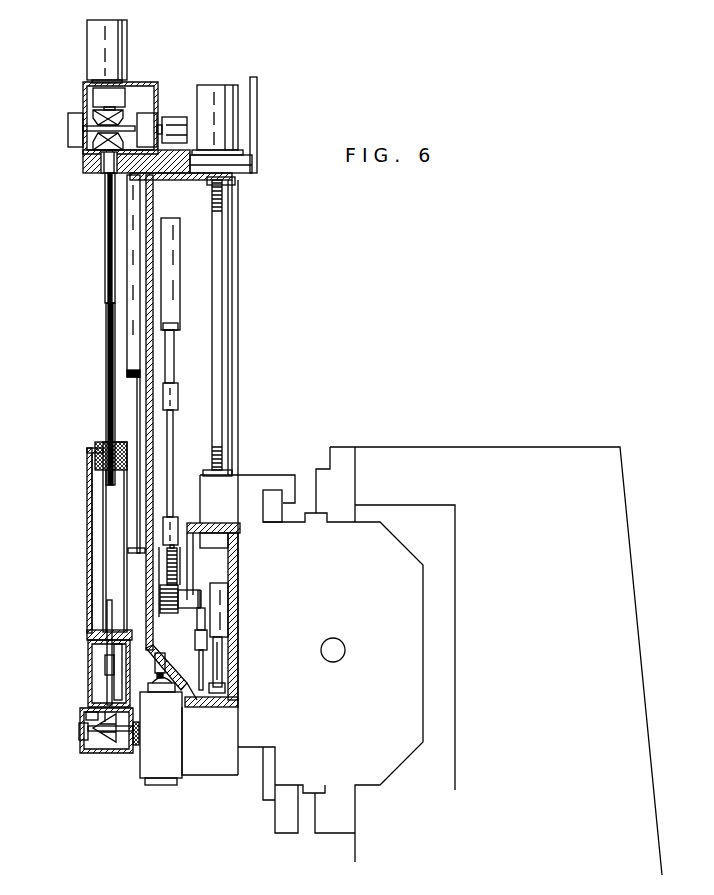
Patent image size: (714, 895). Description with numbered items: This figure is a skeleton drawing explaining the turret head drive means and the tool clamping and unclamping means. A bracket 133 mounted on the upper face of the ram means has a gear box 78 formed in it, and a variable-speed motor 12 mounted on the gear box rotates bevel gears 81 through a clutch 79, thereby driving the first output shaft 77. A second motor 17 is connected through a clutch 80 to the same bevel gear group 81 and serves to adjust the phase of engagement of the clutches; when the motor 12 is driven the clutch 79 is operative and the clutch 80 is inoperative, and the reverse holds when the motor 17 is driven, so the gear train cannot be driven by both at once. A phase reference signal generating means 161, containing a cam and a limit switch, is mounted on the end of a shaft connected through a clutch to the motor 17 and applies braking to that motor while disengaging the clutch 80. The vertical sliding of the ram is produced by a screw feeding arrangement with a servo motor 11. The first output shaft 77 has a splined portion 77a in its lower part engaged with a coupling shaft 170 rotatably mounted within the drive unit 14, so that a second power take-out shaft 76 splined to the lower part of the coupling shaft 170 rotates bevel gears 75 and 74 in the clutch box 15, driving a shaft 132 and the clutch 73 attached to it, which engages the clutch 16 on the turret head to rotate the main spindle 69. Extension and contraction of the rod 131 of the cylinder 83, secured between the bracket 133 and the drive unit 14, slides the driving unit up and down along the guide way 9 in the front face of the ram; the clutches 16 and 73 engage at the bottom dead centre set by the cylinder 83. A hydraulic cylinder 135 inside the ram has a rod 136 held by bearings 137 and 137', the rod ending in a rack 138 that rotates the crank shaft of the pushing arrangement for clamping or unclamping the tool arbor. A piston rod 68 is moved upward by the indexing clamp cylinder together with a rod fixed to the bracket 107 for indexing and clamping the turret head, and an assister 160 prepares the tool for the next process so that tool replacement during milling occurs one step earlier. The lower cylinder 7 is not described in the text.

The variable-speed motor 12 is at (125, 32).
The clutch 79 is at (125, 97).
The bevel gears 81 is at (93, 100).
The clutch 80 is at (148, 120).
The motor 17 is at (172, 128).
The phase reference signal generating means 161 is at (70, 125).
The servo motor 11 is at (225, 92).
The gear box 78 is at (85, 163).
The bracket 133 is at (245, 165).
The first output shaft 77 is at (107, 225).
The cylinder 83 is at (133, 258).
The hydraulic cylinder 135 is at (178, 250).
The splined portion 77a is at (107, 335).
The rod 131 is at (137, 398).
The bearing 137 is at (191, 384).
The guide way 9 is at (147, 445).
The rod 136 is at (172, 438).
The drive unit 14 is at (87, 468).
The coupling shaft 170 is at (90, 510).
The bearing 137' is at (205, 518).
The rack 138 is at (178, 560).
The assister 160 is at (226, 600).
The piston rod 68 is at (222, 658).
The bracket 107 is at (224, 686).
The second power take-out shaft 76 is at (107, 665).
The cylinder 7 is at (88, 686).
The bevel gear 75 is at (85, 715).
The shaft 132 is at (79, 732).
The bevel gear 74 is at (95, 735).
The clutch box 15 is at (100, 753).
The clutch 73 is at (136, 745).
The clutch 16 is at (140, 735).
The main spindle 69 is at (160, 785).